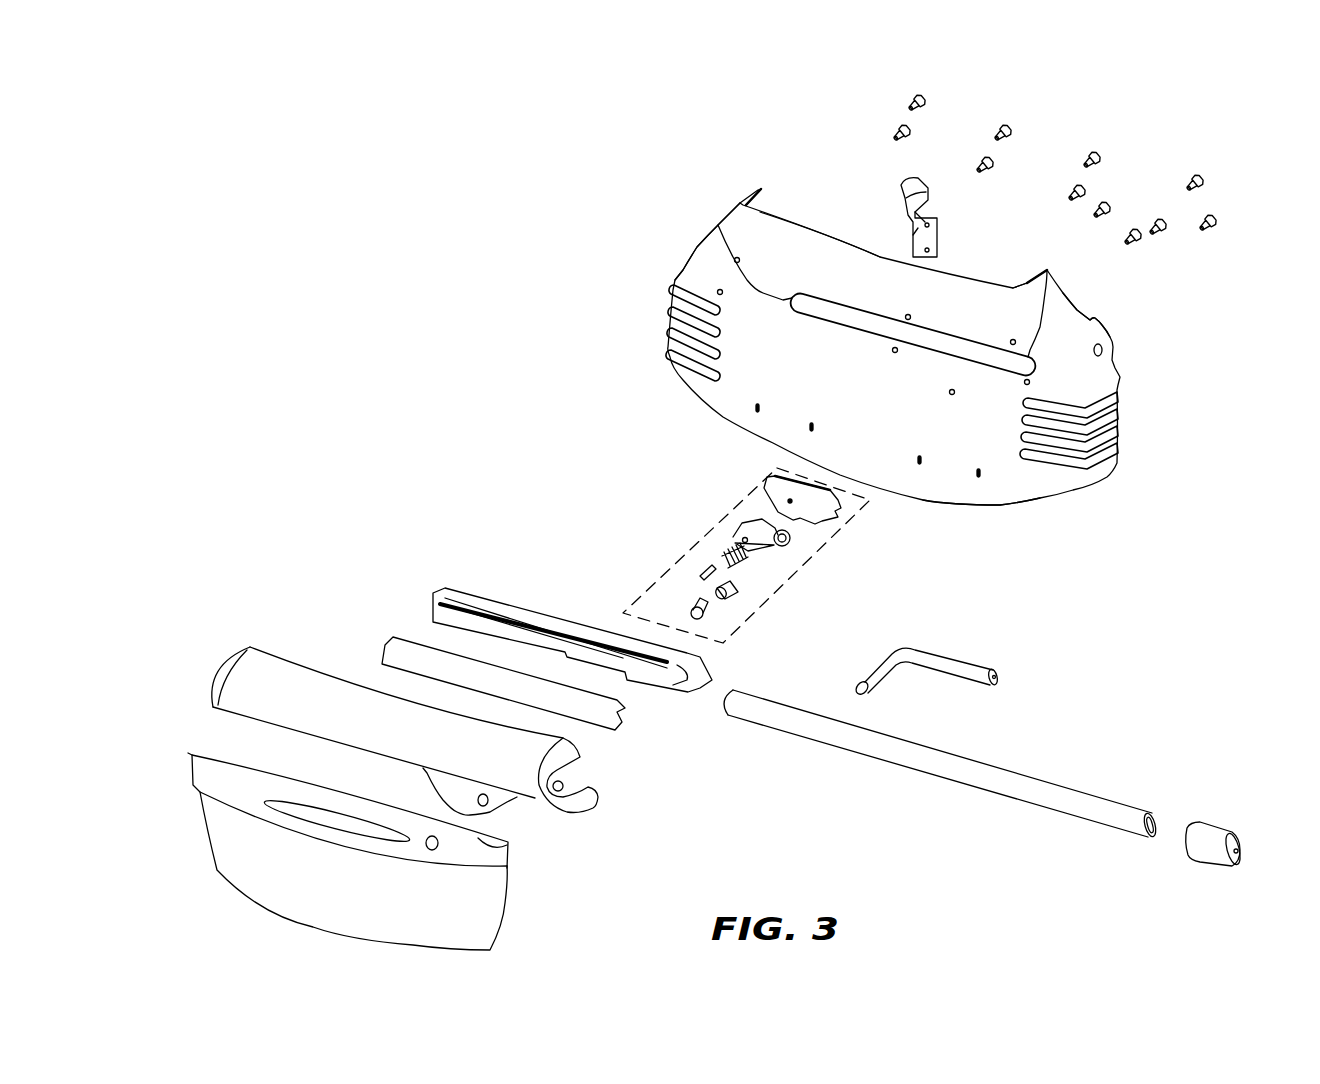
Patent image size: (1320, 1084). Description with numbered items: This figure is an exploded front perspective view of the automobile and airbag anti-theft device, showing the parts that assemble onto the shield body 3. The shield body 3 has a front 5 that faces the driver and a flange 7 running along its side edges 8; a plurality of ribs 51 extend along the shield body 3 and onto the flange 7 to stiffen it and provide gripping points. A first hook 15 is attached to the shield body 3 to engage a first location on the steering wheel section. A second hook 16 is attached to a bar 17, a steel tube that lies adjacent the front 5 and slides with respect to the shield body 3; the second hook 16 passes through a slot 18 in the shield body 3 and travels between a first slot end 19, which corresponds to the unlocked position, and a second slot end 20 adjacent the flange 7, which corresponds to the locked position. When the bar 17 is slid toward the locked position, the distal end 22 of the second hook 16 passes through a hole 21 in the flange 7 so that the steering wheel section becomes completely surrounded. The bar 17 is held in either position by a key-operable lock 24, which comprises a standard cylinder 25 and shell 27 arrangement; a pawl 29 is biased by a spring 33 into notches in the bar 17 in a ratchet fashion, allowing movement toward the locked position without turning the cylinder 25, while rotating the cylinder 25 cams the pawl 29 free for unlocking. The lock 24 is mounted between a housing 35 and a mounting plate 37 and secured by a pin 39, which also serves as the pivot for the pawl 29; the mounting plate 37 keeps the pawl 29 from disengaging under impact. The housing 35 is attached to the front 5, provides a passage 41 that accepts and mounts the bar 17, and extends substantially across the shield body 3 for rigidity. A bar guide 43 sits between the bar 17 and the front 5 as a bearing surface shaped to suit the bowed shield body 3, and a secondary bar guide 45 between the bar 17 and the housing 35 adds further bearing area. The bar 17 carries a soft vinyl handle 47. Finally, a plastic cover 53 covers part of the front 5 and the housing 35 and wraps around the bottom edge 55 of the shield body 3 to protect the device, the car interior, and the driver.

The shield body 3 is at (832, 241).
The front 5 is at (857, 403).
The flange 7 is at (760, 197).
The side edges 8 is at (746, 200).
The first hook 15 is at (905, 185).
The second hook 16 is at (965, 665).
The bar 17 is at (1005, 787).
The slot 18 is at (927, 345).
The first slot end 19 is at (710, 237).
The second slot end 20 is at (1070, 290).
The hole 21 is at (1103, 347).
The distal end 22 is at (1000, 678).
The key-operable lock 24 is at (739, 501).
The cylinder 25 is at (735, 592).
The shell 27 is at (703, 617).
The pawl 29 is at (783, 540).
The spring 33 is at (723, 556).
The housing 35 is at (287, 650).
The mounting plate 37 is at (823, 513).
The pin 39 is at (700, 578).
The passage 41 is at (572, 782).
The bar guide 43 is at (447, 590).
The secondary bar guide 45 is at (390, 633).
The handle 47 is at (1208, 850).
The ribs 51 is at (675, 332).
The plastic cover 53 is at (197, 812).
The bottom edge 55 is at (987, 502).